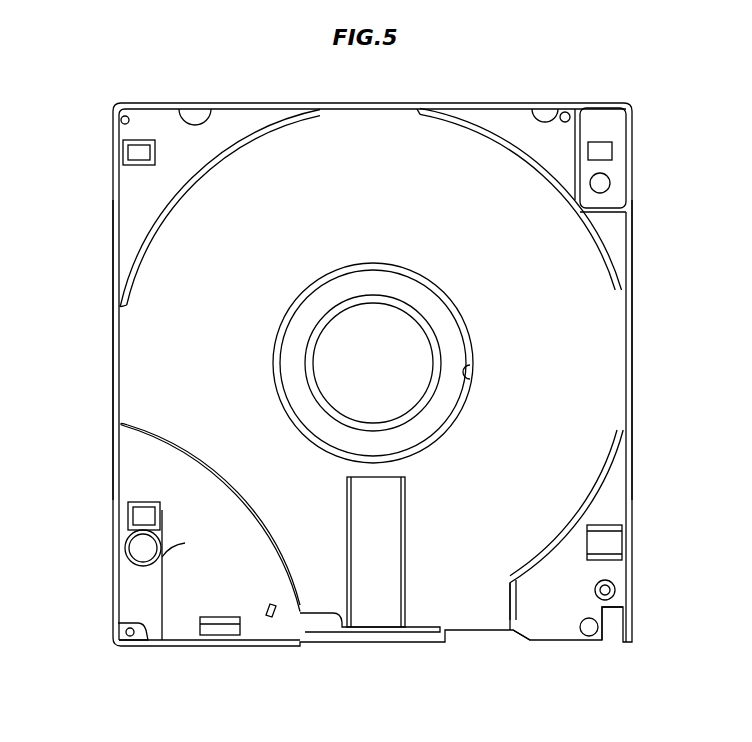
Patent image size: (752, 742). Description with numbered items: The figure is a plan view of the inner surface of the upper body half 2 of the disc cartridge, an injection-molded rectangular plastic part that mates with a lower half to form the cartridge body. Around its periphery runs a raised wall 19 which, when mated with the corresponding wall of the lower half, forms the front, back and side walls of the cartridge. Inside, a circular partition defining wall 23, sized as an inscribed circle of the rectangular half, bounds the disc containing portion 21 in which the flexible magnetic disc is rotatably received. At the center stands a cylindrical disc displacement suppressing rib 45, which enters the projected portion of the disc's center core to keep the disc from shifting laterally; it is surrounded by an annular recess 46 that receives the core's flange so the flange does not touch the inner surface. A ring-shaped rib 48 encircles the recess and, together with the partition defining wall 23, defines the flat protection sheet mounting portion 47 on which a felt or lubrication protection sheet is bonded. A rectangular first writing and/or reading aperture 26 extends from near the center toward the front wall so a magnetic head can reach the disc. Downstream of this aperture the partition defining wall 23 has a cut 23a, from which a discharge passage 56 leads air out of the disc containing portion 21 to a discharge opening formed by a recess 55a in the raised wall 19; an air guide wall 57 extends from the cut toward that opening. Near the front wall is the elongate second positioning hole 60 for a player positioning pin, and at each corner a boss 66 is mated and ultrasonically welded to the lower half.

The upper body half 2 is at (515, 103).
The raised wall 19 is at (112, 262).
The disc containing portion 21 is at (390, 212).
The partition defining wall 23 is at (160, 228).
The cut 23a is at (506, 598).
The first writing and/or reading aperture 26 is at (396, 498).
The disc displacement suppressing rib 45 is at (387, 303).
The annular recess 46 is at (462, 373).
The protection sheet mounting portion 47 is at (258, 168).
The ring-shaped rib 48 is at (472, 300).
The recess 55a is at (472, 648).
The discharge passage 56 is at (490, 610).
The air guide wall 57 is at (517, 603).
The second positioning hole 60 is at (590, 640).
The boss 66 is at (120, 120).